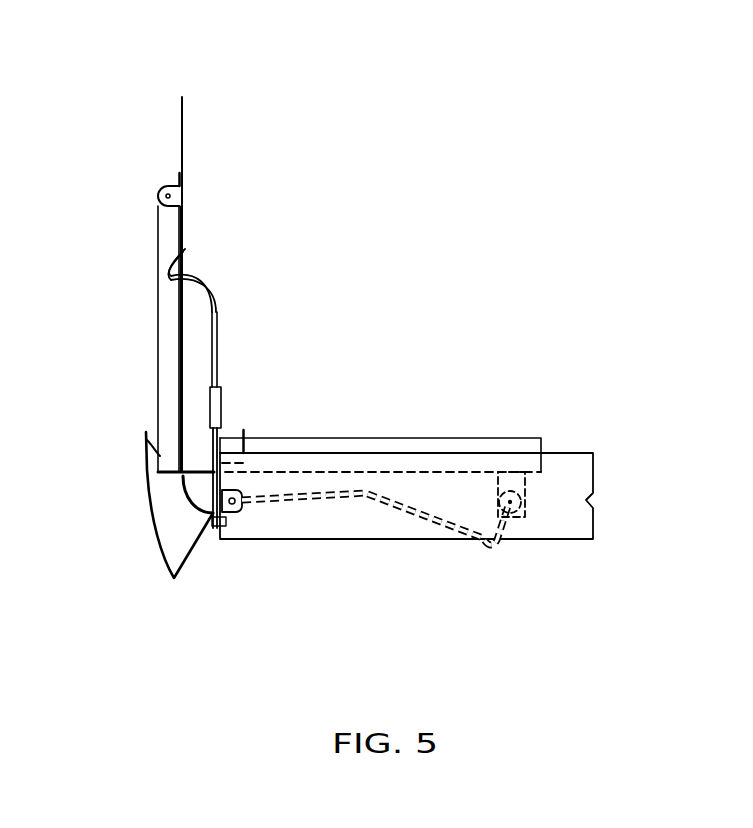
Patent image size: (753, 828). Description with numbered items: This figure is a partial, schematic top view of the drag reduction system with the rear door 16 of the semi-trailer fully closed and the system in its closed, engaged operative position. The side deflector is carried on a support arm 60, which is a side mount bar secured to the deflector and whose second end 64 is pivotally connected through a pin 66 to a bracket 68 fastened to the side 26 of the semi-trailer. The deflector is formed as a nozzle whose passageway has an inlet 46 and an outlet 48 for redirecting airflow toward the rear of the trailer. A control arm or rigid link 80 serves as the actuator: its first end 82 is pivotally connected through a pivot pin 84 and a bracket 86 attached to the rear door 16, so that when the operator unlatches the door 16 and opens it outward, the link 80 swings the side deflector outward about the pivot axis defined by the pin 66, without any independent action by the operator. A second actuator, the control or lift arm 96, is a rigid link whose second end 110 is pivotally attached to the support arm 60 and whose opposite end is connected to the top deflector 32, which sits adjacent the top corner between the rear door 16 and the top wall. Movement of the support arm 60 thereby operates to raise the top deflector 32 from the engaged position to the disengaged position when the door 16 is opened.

The rear door 16 is at (525, 439).
The side 26 is at (178, 115).
The top deflector 32 is at (562, 462).
The inlet 46 is at (148, 442).
The outlet 48 is at (178, 568).
The support arm 60 is at (167, 302).
The second end 64 is at (170, 217).
The pin 66 is at (167, 188).
The bracket 68 is at (172, 185).
The control arm 80 is at (306, 500).
The first end 82 is at (483, 547).
The pivot pin 84 is at (515, 507).
The bracket 86 is at (507, 470).
The lift arm 96 is at (217, 307).
The second end 110 is at (183, 257).